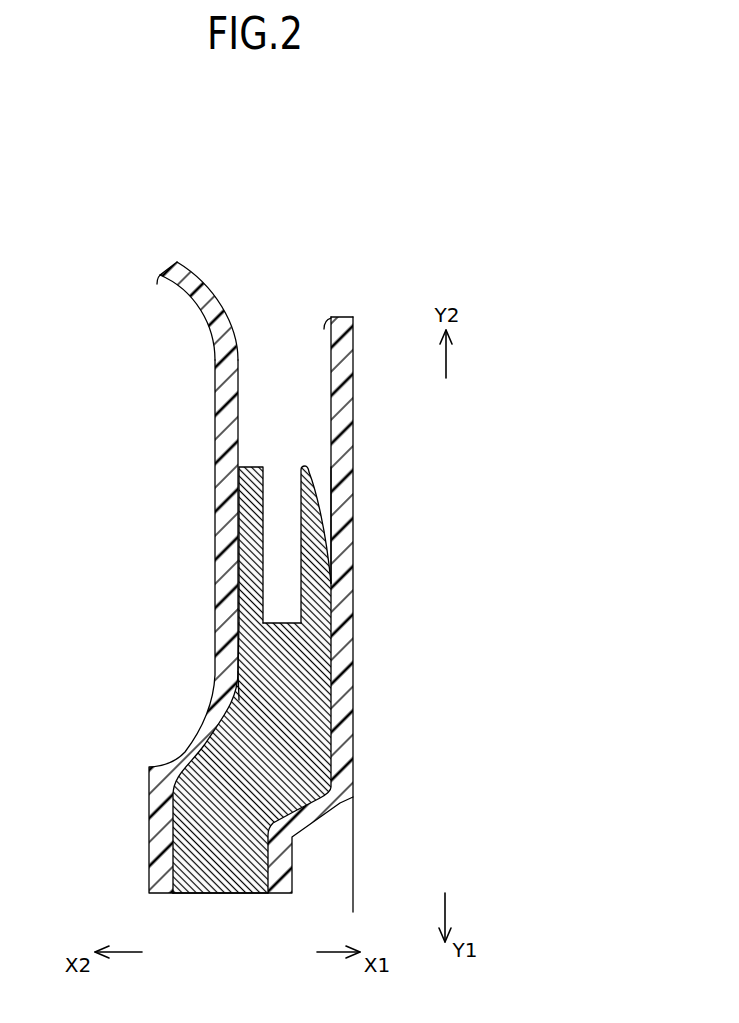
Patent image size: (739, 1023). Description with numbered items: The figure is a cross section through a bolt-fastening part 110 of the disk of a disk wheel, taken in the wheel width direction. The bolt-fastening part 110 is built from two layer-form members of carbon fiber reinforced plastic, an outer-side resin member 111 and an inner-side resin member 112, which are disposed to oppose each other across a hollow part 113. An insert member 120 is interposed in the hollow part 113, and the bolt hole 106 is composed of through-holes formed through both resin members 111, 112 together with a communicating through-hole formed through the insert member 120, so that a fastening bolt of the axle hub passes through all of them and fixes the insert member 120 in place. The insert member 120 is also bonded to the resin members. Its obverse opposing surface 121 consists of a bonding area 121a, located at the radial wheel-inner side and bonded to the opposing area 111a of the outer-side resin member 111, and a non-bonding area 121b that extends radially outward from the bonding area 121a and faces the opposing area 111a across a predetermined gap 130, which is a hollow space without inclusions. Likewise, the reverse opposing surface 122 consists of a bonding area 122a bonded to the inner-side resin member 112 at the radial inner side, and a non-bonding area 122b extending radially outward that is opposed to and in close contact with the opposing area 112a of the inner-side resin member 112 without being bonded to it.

The bolt hole 106 is at (255, 897).
The bolt-fastening part 110 is at (368, 713).
The outer-side resin member 111 is at (356, 418).
The opposing area 111a is at (338, 510).
The inner-side resin member 112 is at (213, 458).
The opposing area 112a is at (223, 507).
The hollow part 113 is at (269, 394).
The insert member 120 is at (333, 757).
The one opposing surface 121 is at (435, 582).
The bonding area 121a is at (330, 643).
The non-bonding area 121b is at (323, 550).
The other opposing surface 122 is at (130, 582).
The bonding area 122a is at (245, 643).
The non-bonding area 122b is at (239, 570).
The predetermined gap 130 is at (322, 490).